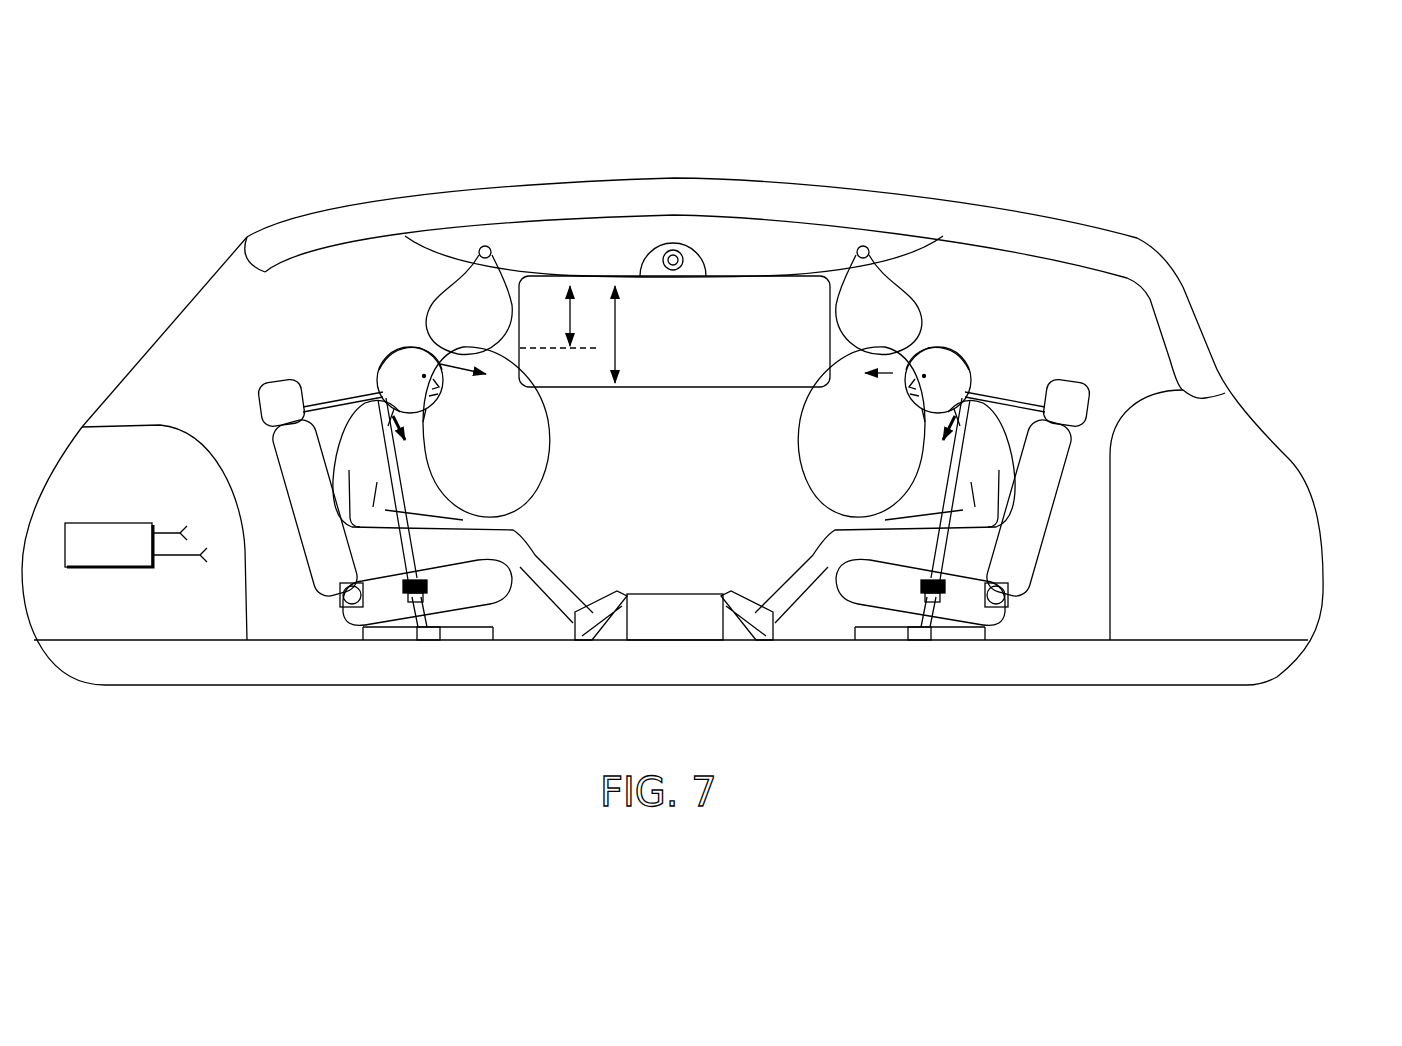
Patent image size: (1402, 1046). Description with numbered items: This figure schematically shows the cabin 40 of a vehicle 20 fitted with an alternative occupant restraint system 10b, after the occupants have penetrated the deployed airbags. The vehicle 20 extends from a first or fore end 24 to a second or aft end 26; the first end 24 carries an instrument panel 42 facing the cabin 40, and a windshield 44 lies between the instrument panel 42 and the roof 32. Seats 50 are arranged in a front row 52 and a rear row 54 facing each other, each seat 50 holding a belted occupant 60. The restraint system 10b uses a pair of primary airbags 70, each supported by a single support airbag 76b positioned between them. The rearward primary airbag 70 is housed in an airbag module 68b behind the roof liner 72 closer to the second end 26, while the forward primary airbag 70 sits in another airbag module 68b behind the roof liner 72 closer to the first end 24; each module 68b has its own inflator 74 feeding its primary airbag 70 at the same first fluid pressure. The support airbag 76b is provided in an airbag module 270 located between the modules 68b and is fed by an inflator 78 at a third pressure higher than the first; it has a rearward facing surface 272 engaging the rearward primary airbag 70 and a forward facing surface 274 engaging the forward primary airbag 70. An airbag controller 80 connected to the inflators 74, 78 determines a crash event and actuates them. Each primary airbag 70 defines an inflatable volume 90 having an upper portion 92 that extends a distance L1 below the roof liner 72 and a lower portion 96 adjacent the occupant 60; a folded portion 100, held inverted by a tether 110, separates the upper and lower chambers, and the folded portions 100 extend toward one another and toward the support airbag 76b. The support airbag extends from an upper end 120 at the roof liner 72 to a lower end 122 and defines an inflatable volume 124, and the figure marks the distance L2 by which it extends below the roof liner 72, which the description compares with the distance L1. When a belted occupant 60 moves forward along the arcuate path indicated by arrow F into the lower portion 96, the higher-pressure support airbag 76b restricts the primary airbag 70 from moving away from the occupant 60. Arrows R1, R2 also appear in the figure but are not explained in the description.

The occupant restraint system 10b is at (890, 238).
The vehicle 20 is at (1284, 557).
The first or fore end 24 is at (100, 363).
The second or aft end 26 is at (1257, 369).
The roof 32 is at (977, 222).
The passenger compartment or cabin 40 is at (676, 520).
The instrument panel 42 is at (183, 427).
The windshield 44 is at (164, 333).
The seats 50 is at (332, 580).
The front row 52 is at (412, 692).
The rear row 54 is at (918, 692).
The occupant 60 is at (380, 383).
The airbag module 68b is at (451, 238).
The primary inflatable curtain airbag 70 is at (370, 326).
The roof liner 72 is at (940, 238).
The inflator 74 is at (488, 246).
The support airbag 76b is at (685, 412).
The inflator 78 is at (677, 266).
The airbag controller 80 is at (110, 533).
The inflatable volume 90 is at (525, 448).
The upper portion 92 is at (437, 315).
The lower portion 96 is at (540, 488).
The folded portion 100 is at (467, 350).
The tether 110 is at (503, 374).
The upper end 120 is at (609, 272).
The lower end 122 is at (747, 402).
The inflatable volume 124 is at (630, 362).
The airbag module 270 is at (676, 240).
The rearward facing surface 272 is at (838, 295).
The forward facing surface 274 is at (520, 288).
The direction of occupant movement F is at (318, 410).
The first direction R1 is at (888, 403).
The second direction R2 is at (463, 401).
The distance L1 is at (560, 317).
The distance L2 is at (629, 334).